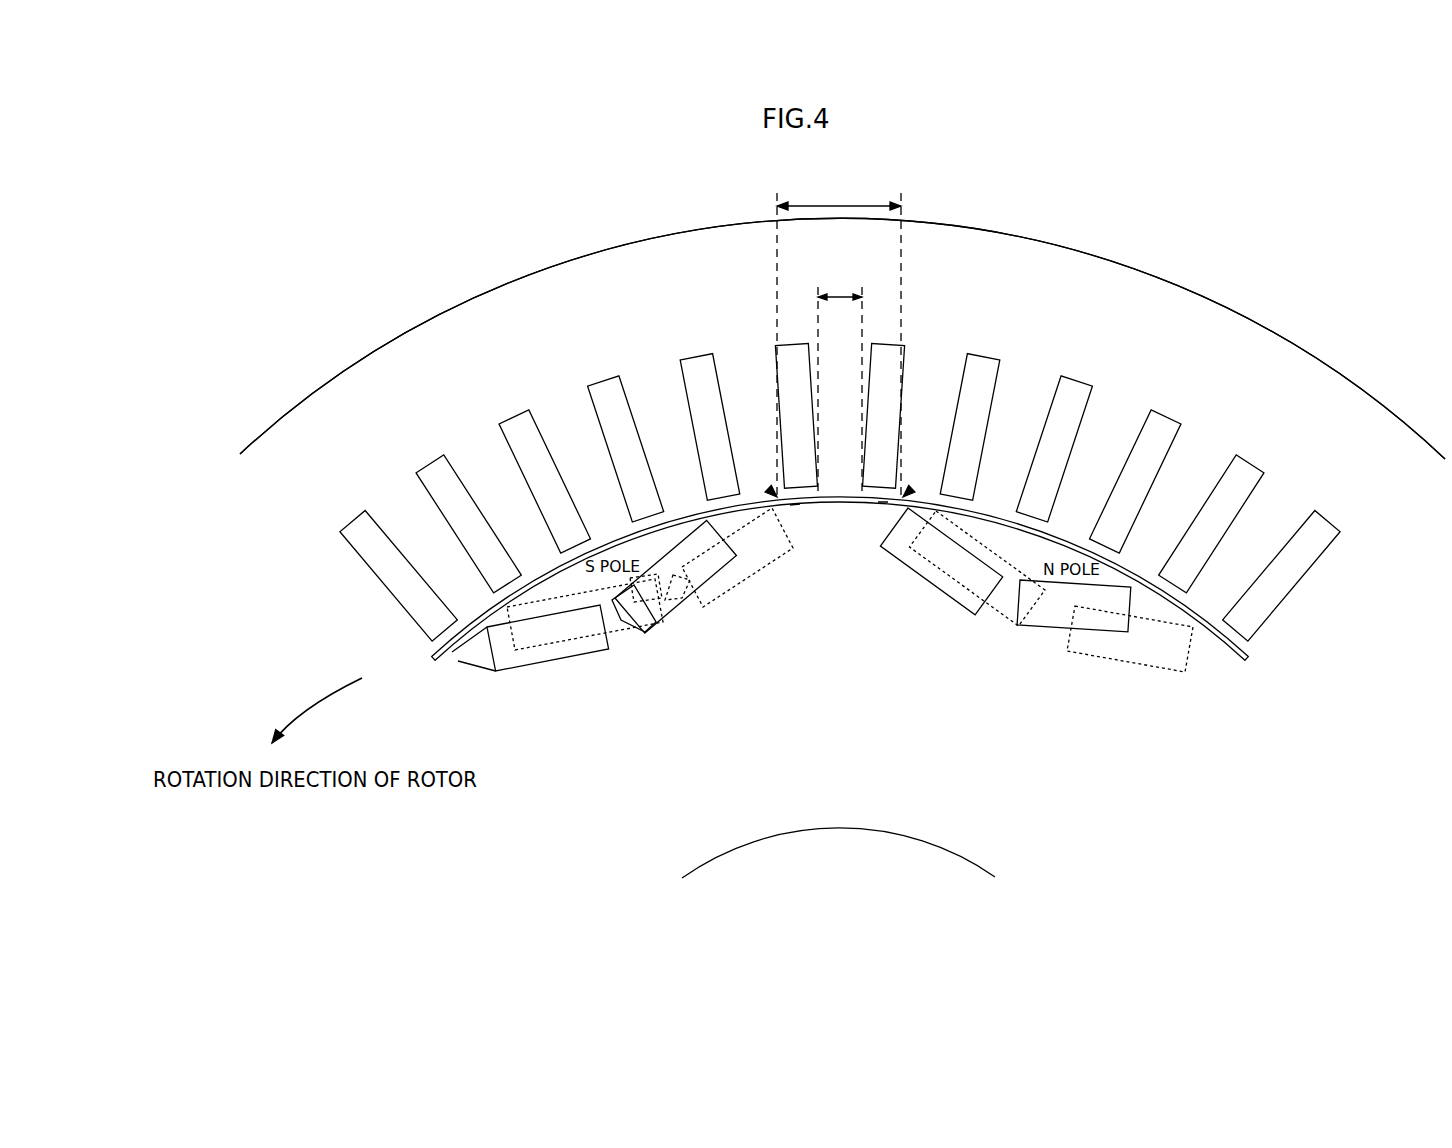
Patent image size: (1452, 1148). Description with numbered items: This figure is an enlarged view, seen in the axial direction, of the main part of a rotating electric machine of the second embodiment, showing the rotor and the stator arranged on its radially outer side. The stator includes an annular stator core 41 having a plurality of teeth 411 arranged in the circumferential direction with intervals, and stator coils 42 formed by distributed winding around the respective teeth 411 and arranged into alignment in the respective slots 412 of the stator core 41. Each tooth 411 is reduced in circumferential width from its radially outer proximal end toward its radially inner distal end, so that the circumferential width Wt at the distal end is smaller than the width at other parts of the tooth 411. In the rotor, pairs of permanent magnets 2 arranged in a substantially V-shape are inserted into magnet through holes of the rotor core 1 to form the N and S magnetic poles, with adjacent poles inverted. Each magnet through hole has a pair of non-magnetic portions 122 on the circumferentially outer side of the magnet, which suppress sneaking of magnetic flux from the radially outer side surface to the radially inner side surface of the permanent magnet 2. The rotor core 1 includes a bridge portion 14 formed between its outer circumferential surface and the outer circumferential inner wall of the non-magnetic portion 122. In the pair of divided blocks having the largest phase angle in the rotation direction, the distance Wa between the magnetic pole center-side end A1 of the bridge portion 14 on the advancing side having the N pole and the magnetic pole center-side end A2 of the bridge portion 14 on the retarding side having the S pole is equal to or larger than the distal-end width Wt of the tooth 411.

The rotor core 1 is at (837, 812).
The permanent magnet 2 is at (685, 560).
The bridge portion 14 is at (796, 505).
The non-magnetic portion 122 is at (858, 508).
The stator core 41 is at (458, 306).
The tooth 411 is at (417, 528).
The slot 412 is at (417, 608).
The stator coil 42 is at (380, 580).
The magnetic pole center-side end of the bridge portion on the advancing side A1 is at (908, 492).
The magnetic pole center-side end of the bridge portion on the retarding side A2 is at (772, 492).
The distance Wa is at (839, 333).
The circumferential width at the distal end of the tooth Wt is at (840, 373).